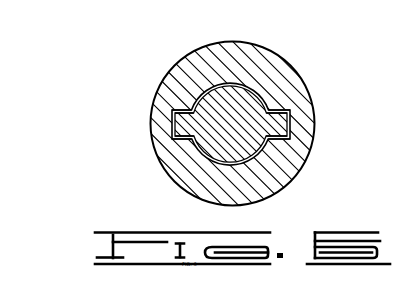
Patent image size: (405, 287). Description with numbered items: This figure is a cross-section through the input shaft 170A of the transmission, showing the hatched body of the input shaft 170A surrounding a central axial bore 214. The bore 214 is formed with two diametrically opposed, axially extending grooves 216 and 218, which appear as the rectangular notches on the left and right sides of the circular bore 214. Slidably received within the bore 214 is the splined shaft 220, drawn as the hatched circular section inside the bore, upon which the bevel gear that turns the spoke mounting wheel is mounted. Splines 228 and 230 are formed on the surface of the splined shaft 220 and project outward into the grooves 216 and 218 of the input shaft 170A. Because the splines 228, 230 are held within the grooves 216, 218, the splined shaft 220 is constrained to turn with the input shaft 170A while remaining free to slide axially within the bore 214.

The input shaft 170A is at (278, 77).
The axial bore 214 is at (221, 86).
The splined shaft 220 is at (235, 104).
The spline 228 is at (183, 117).
The axially extending groove 216 is at (183, 134).
The spline 230 is at (280, 118).
The axially extending groove 218 is at (282, 132).